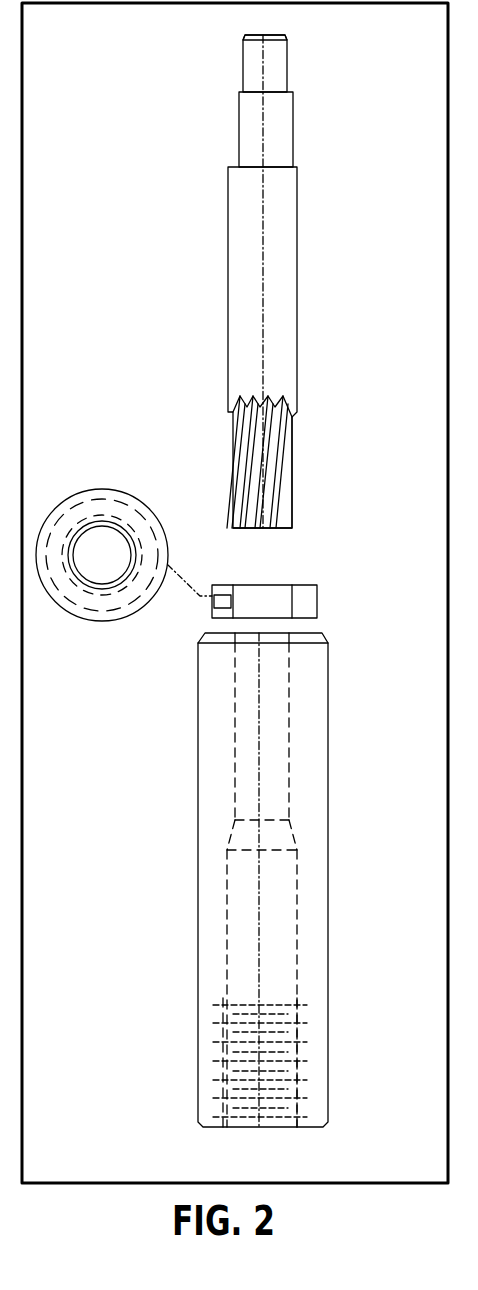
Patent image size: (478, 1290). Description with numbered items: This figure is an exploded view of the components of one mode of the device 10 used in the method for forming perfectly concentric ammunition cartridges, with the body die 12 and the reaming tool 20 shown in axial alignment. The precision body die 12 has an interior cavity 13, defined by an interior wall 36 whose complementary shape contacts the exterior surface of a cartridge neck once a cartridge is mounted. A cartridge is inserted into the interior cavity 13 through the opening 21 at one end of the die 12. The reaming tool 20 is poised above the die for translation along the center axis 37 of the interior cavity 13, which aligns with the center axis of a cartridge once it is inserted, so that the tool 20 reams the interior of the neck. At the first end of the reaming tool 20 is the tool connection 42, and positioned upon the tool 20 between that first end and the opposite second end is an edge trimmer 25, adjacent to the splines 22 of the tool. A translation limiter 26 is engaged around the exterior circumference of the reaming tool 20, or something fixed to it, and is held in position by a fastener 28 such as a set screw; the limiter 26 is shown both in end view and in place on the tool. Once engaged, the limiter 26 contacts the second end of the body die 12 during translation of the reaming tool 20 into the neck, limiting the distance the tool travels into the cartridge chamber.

The device 10 is at (126, 166).
The body die 12 is at (205, 873).
The interior cavity 13 is at (278, 698).
The reaming tool 20 is at (298, 232).
The opening 21 is at (275, 1127).
The splines 22 is at (252, 435).
The edge trimmer 25 is at (288, 412).
The translation limiter 26 is at (92, 490).
The fastener 28 is at (212, 608).
The interior wall 36 is at (297, 866).
The center axis 37 is at (256, 934).
The tool connection 42 is at (262, 50).